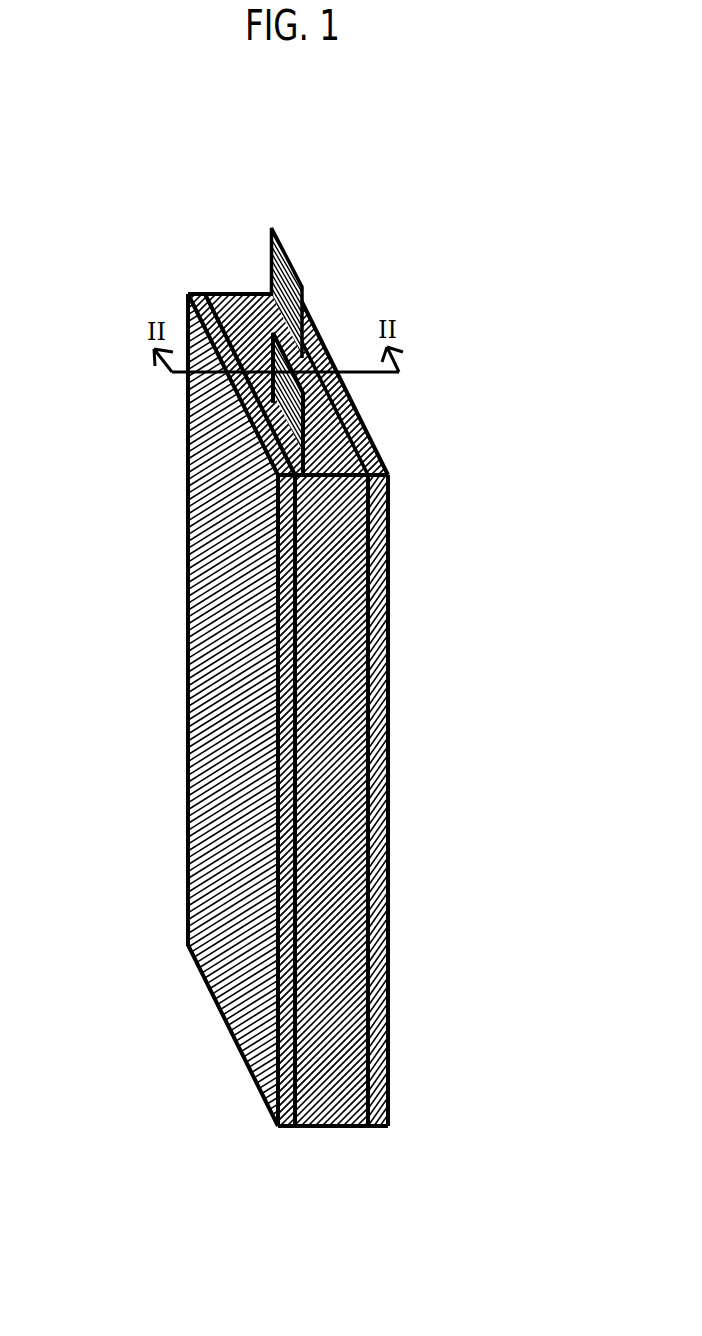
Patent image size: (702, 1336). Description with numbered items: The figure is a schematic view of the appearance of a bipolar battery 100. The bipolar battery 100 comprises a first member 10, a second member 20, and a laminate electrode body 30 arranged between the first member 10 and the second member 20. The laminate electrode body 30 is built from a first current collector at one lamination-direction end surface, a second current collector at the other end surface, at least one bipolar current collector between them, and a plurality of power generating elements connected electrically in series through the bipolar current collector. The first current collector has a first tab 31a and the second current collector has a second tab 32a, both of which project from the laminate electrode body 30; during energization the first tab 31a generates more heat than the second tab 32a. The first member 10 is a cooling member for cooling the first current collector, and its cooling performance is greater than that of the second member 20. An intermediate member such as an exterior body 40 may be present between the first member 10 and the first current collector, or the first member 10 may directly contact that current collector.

The bipolar battery 100 is at (308, 118).
The first member 10 is at (216, 747).
The second member 20 is at (391, 748).
The laminate electrode body 30 is at (352, 1084).
The exterior body 40 is at (353, 487).
The first tab 31a is at (268, 404).
The second tab 32a is at (297, 259).